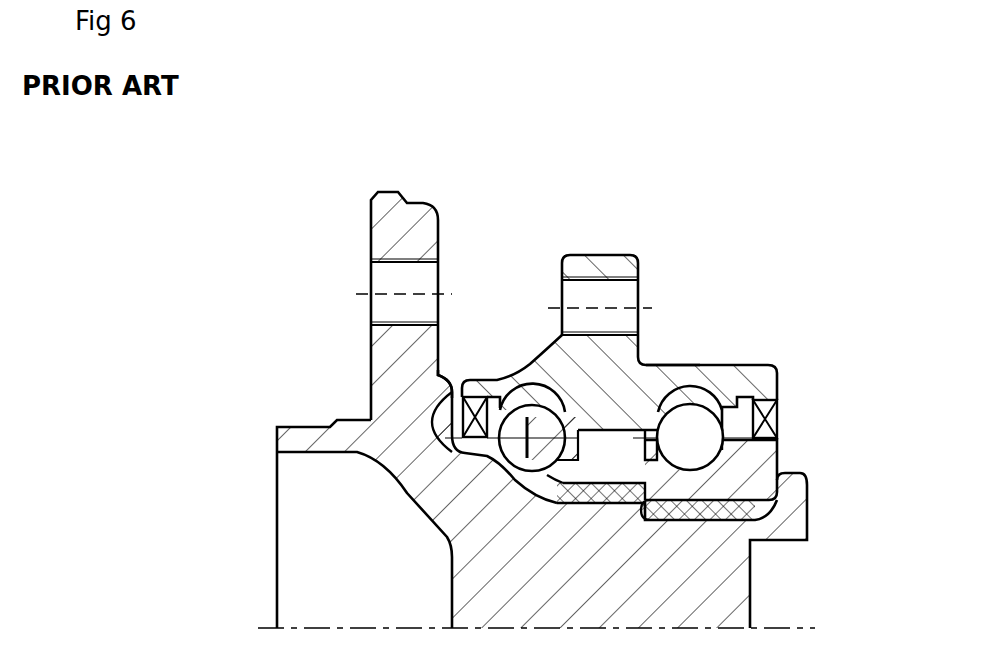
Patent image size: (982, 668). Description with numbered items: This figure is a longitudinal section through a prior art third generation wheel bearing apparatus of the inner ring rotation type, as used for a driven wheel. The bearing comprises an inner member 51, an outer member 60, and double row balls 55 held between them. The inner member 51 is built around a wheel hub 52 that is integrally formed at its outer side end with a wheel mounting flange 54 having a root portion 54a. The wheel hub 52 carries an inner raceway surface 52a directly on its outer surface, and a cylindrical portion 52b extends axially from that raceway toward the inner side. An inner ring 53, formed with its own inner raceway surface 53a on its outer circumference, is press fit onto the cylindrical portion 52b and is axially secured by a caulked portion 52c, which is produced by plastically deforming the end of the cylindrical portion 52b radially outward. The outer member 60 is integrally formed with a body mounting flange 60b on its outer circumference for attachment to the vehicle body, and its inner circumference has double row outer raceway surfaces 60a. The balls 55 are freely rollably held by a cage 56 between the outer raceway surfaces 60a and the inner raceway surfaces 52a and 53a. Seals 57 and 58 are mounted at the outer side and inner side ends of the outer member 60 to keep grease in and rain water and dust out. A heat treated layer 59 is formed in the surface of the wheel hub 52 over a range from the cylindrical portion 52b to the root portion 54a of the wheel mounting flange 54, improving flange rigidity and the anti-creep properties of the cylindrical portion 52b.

The inner member 51 is at (408, 520).
The wheel hub 52 is at (360, 452).
The inner raceway surface 52a is at (465, 455).
The cylindrical portion 52b is at (755, 497).
The caulked portion 52c is at (802, 492).
The inner ring 53 is at (745, 452).
The inner raceway surface 53a is at (700, 435).
The wheel mounting flange 54 is at (407, 228).
The root portion 54a is at (447, 387).
The balls 55 is at (523, 467).
The cage 56 is at (602, 415).
The seal 57 is at (463, 418).
The seal 58 is at (779, 418).
The heat treated layer 59 is at (668, 468).
The outer member 60 is at (540, 380).
The outer raceway surface 60a is at (500, 410).
The body mounting flange 60b is at (602, 263).